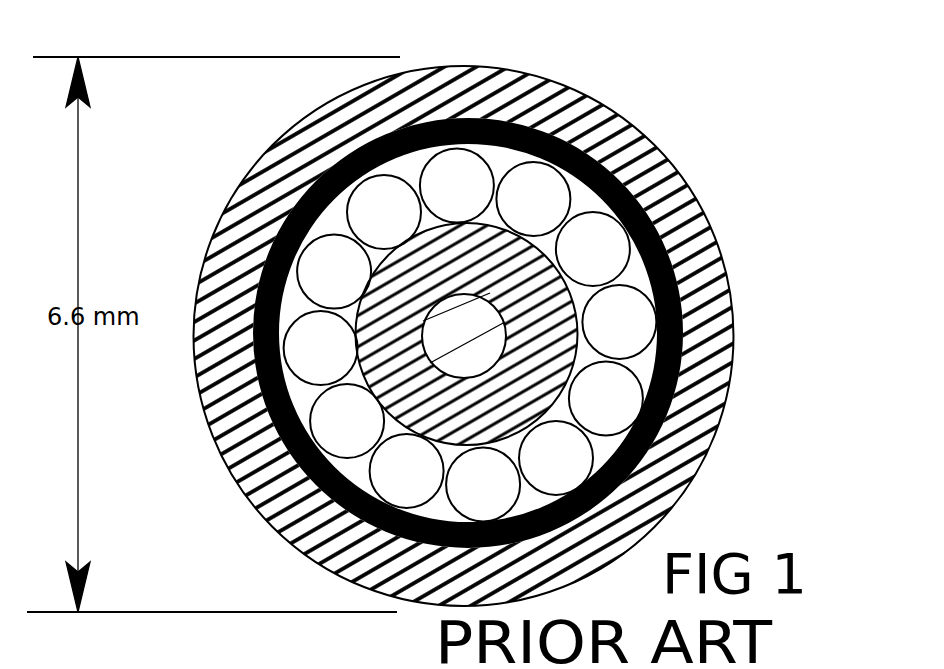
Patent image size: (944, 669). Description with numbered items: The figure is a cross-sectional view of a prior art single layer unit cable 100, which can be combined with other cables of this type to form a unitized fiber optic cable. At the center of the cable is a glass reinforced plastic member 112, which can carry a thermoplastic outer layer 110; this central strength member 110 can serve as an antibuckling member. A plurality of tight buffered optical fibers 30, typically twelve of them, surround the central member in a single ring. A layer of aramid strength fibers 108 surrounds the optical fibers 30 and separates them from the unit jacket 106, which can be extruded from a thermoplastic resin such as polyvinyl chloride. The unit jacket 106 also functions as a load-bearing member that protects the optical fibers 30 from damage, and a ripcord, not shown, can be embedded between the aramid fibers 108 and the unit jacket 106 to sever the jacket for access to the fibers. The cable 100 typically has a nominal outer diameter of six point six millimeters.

The single layer unit cable 100 is at (652, 128).
The tight buffered optical fibers 30 is at (540, 192).
The unit jacket 106 is at (737, 327).
The aramid strength fibers 108 is at (612, 498).
The thermoplastic outer layer 110 is at (453, 353).
The glass reinforced plastic member 112 is at (517, 363).